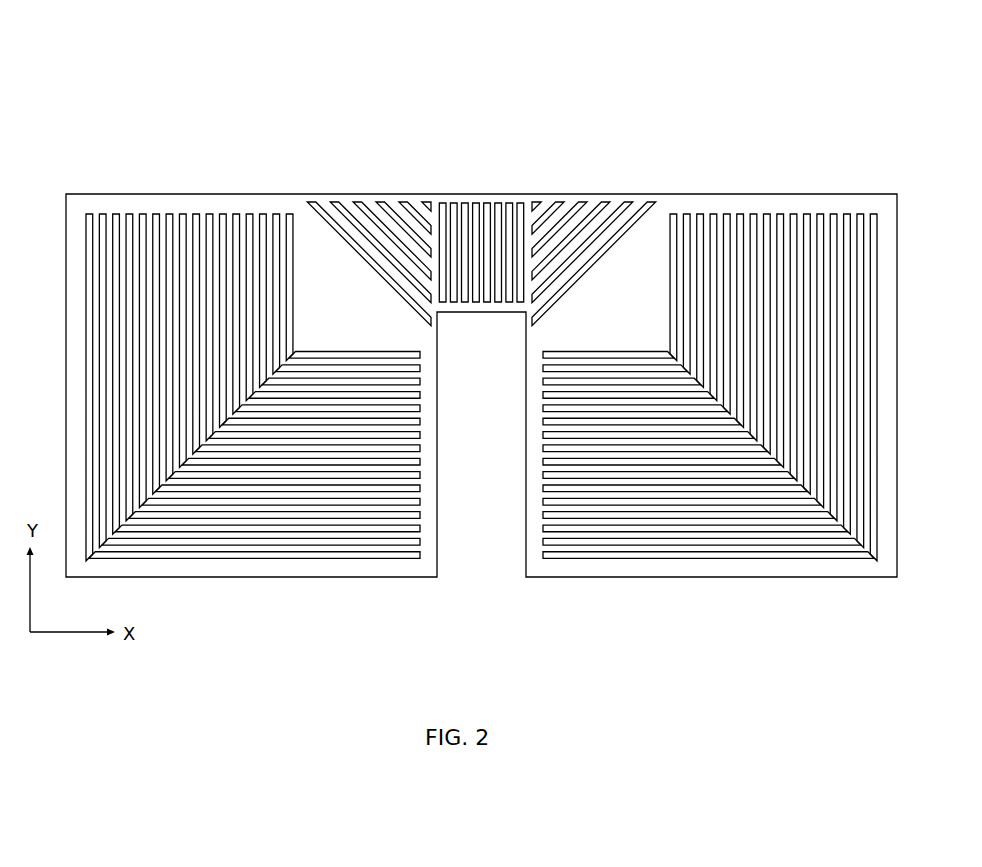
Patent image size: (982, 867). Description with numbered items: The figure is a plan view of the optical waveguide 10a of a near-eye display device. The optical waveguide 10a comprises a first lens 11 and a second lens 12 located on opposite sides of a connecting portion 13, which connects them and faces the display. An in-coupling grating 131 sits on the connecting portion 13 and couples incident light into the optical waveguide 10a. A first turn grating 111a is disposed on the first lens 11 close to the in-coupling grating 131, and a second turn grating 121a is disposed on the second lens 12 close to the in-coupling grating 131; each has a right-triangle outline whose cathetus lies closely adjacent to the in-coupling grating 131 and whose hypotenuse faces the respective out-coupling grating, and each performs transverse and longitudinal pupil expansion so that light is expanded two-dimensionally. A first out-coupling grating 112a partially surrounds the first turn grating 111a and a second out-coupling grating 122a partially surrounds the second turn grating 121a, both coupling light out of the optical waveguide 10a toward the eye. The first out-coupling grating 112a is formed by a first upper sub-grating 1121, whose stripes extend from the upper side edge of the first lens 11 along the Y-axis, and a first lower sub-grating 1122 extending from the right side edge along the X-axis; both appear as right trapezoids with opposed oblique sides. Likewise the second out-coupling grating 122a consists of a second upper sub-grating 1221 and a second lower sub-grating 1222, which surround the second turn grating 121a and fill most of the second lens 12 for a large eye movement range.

The optical waveguide 10a is at (483, 66).
The first lens 11 is at (257, 205).
The first turn grating 111a is at (362, 207).
The first out-coupling grating 112a is at (332, 643).
The first upper sub-grating 1121 is at (130, 503).
The first lower sub-grating 1122 is at (301, 554).
The second lens 12 is at (797, 210).
The second turn grating 121a is at (598, 210).
The second out-coupling grating 122a is at (790, 643).
The second upper sub-grating 1221 is at (833, 503).
The second lower sub-grating 1222 is at (662, 554).
The connecting portion 13 is at (477, 205).
The in-coupling grating 131 is at (489, 300).